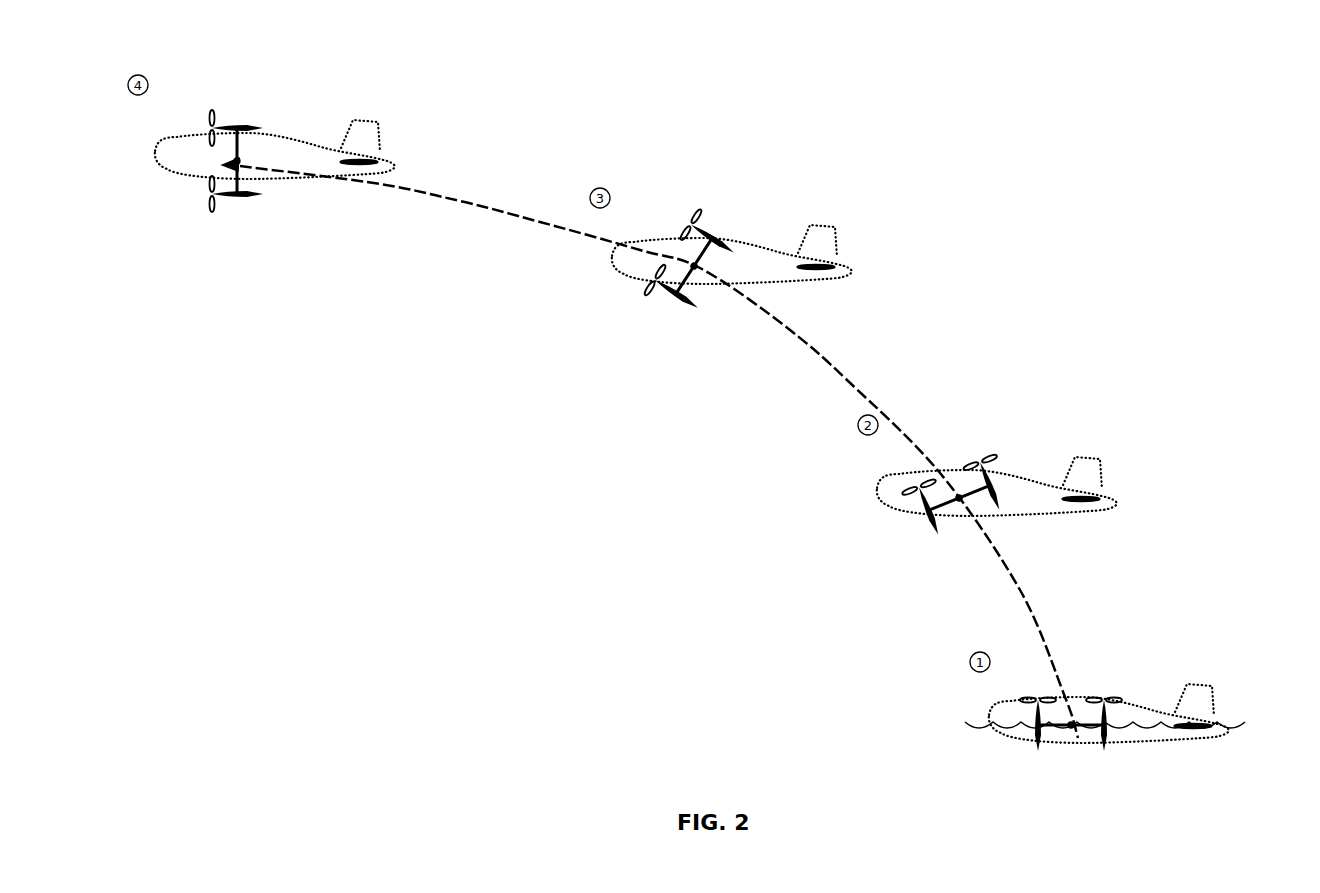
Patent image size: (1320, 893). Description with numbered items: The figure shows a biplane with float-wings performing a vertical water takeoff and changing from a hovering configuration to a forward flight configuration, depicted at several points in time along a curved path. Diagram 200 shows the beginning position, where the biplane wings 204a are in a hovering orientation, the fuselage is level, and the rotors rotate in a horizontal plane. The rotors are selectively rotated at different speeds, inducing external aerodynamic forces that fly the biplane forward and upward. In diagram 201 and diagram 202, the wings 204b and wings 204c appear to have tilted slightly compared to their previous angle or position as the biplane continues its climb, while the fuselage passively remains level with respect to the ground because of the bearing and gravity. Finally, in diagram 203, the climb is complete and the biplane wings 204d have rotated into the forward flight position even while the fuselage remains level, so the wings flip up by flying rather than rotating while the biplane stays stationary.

The diagram 200 is at (1125, 676).
The diagram 201 is at (1025, 451).
The diagram 202 is at (760, 215).
The diagram 203 is at (300, 113).
The biplane wings 204a is at (1107, 732).
The biplane wings 204b is at (935, 525).
The biplane wings 204c is at (681, 302).
The biplane wings 204d is at (239, 194).